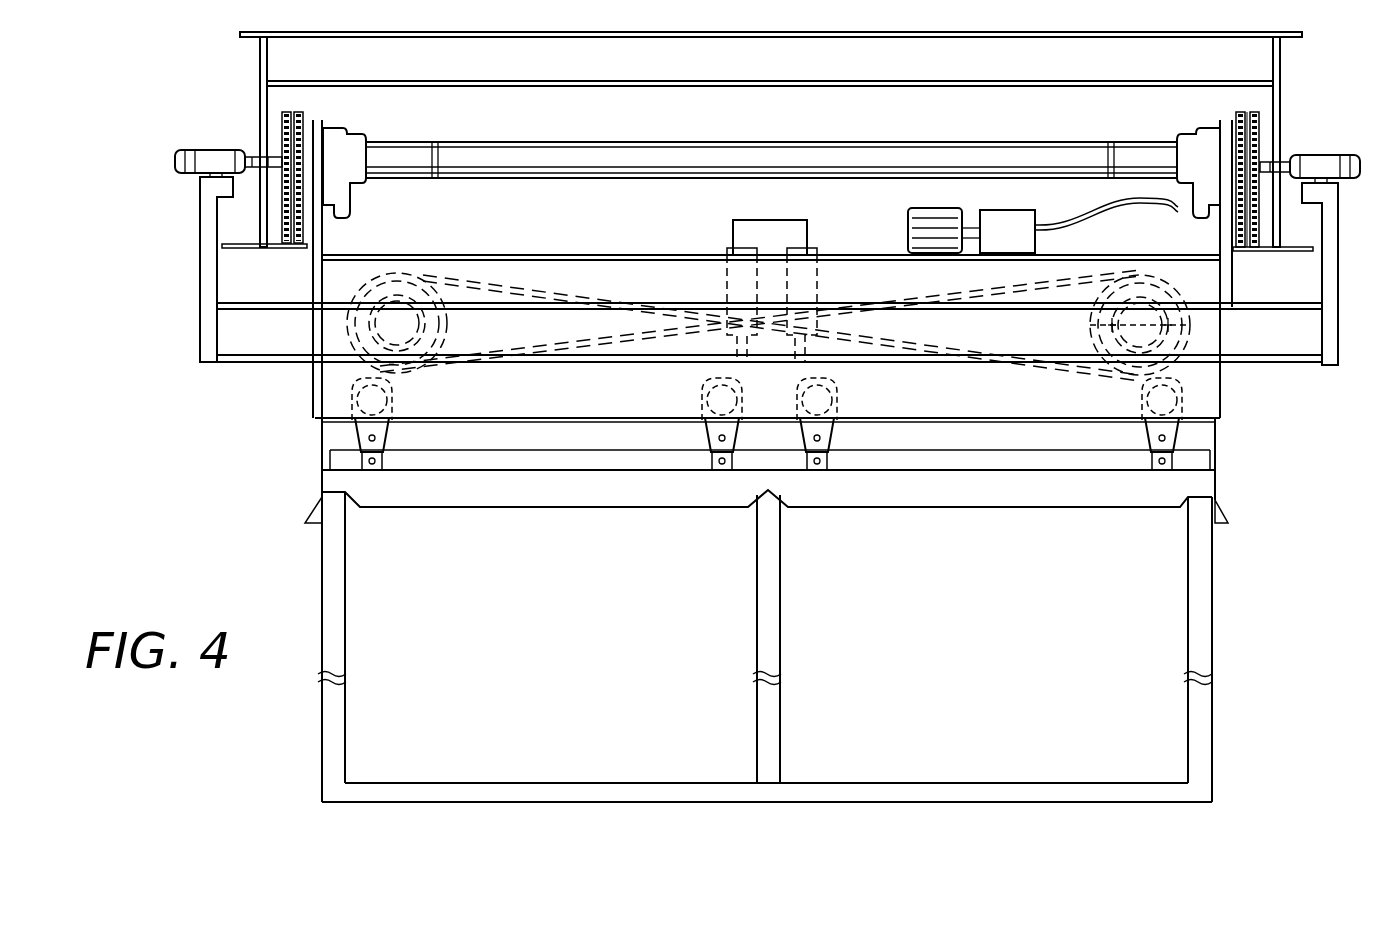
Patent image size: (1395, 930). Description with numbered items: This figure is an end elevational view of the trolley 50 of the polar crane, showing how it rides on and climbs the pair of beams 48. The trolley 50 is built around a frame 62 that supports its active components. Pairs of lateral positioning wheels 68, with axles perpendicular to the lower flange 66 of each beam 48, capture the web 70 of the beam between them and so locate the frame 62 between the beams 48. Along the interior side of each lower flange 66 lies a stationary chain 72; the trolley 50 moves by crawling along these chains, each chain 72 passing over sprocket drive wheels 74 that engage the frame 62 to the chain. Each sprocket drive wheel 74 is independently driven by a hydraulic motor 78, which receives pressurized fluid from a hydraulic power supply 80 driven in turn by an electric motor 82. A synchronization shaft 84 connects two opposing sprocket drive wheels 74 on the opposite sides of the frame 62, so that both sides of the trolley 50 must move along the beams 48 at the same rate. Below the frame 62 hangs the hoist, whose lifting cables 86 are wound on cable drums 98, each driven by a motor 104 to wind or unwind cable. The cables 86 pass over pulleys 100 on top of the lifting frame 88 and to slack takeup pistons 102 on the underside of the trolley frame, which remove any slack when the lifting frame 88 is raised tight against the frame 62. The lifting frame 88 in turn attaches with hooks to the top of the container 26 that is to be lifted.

The container 26 is at (1212, 640).
The beam 48 is at (262, 95).
The trolley 50 is at (492, 141).
The frame 62 is at (555, 253).
The lower flange 66 is at (1322, 268).
The lateral positioning wheels 68 is at (270, 160).
The web 70 is at (260, 110).
The stationary chain 72 is at (1240, 250).
The sprocket drive wheel 74 is at (1240, 120).
The hydraulic motor 78 is at (1212, 138).
The hydraulic power supply 80 is at (1023, 210).
The electric motor 82 is at (905, 222).
The synchronization shaft 84 is at (655, 150).
The lifting cable 86 is at (965, 478).
The lifting frame 88 is at (462, 505).
The cable drum 98 is at (1108, 330).
The pulley 100 is at (842, 397).
The slack takeup piston 102 is at (818, 283).
The motor 104 is at (1172, 330).